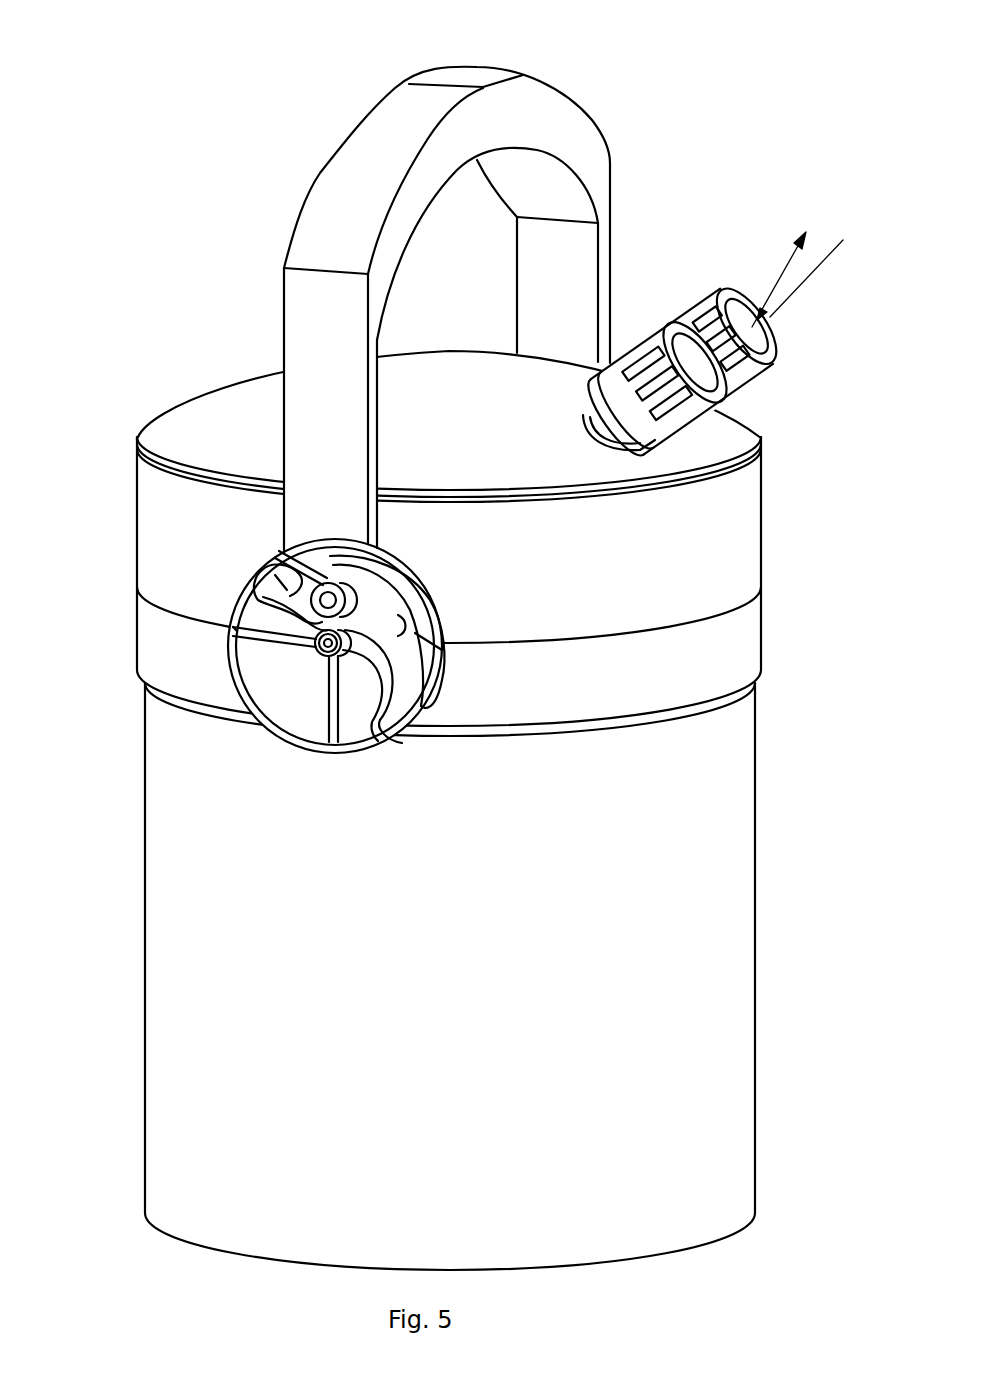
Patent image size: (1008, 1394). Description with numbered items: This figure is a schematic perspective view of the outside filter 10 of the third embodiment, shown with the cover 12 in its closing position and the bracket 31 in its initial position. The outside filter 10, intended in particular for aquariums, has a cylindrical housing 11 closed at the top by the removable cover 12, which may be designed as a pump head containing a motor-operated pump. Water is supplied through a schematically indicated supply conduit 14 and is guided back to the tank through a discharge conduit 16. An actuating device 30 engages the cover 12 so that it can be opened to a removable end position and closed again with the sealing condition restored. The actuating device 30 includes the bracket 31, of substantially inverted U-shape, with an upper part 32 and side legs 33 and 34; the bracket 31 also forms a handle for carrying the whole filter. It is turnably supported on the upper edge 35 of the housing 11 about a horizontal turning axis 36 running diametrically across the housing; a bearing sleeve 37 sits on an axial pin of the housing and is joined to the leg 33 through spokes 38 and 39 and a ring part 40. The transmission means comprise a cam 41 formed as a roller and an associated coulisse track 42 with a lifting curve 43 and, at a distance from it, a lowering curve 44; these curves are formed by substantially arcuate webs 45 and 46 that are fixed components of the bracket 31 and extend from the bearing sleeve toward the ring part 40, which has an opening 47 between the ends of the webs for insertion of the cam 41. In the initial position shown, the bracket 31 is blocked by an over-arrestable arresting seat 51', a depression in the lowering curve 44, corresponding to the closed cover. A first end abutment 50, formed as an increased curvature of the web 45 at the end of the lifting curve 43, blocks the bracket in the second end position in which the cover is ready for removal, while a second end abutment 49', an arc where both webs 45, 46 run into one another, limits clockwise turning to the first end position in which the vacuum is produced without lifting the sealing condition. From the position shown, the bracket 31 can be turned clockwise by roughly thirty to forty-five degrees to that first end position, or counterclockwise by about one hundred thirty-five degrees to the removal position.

The outside filter 10 is at (786, 713).
The housing 11 is at (705, 845).
The cover 12 is at (703, 527).
The supply conduit 14 is at (812, 275).
The discharge conduit 16 is at (758, 288).
The actuating device 30 is at (258, 338).
The bracket 31 is at (318, 152).
The upper part 32 is at (537, 115).
The leg 33 is at (305, 312).
The leg 34 is at (572, 260).
The upper edge 35 is at (737, 622).
The turning axis 36 is at (320, 670).
The bearing sleeve 37 is at (313, 660).
The spoke 38 is at (240, 688).
The spoke 39 is at (317, 693).
The ring part 40 is at (270, 670).
The cam 41 is at (380, 573).
The coulisse track 42 is at (262, 562).
The lifting curve 43 is at (388, 660).
The lowering curve 44 is at (440, 613).
The web 45 is at (388, 655).
The web 46 is at (420, 578).
The opening 47 is at (417, 715).
The second end abutment 49' is at (202, 584).
The first end abutment 50 is at (388, 713).
The arresting seat 51' is at (393, 499).